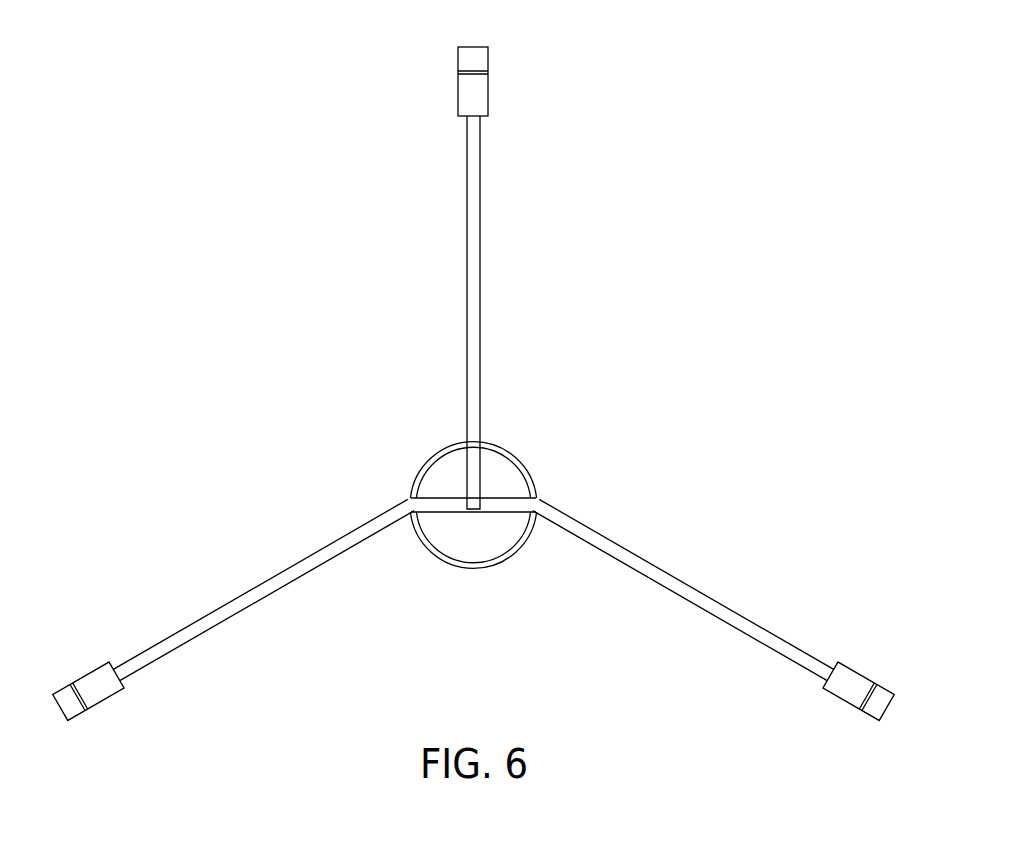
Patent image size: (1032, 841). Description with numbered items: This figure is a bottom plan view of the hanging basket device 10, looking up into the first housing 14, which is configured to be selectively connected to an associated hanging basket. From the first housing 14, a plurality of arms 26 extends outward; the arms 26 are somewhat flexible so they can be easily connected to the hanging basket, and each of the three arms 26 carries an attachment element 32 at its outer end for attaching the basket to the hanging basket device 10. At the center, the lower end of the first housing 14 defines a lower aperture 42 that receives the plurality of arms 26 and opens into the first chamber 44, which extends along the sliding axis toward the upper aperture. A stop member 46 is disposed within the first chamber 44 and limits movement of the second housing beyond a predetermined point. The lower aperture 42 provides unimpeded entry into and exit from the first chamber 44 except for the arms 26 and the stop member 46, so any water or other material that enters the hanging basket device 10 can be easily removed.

The hanging basket device 10 is at (229, 186).
The first housing 14 is at (597, 442).
The plurality of arms 26 is at (475, 268).
The attachment elements 32 is at (442, 75).
The lower aperture 42 is at (520, 570).
The first chamber 44 is at (460, 578).
The stop member 46 is at (503, 507).